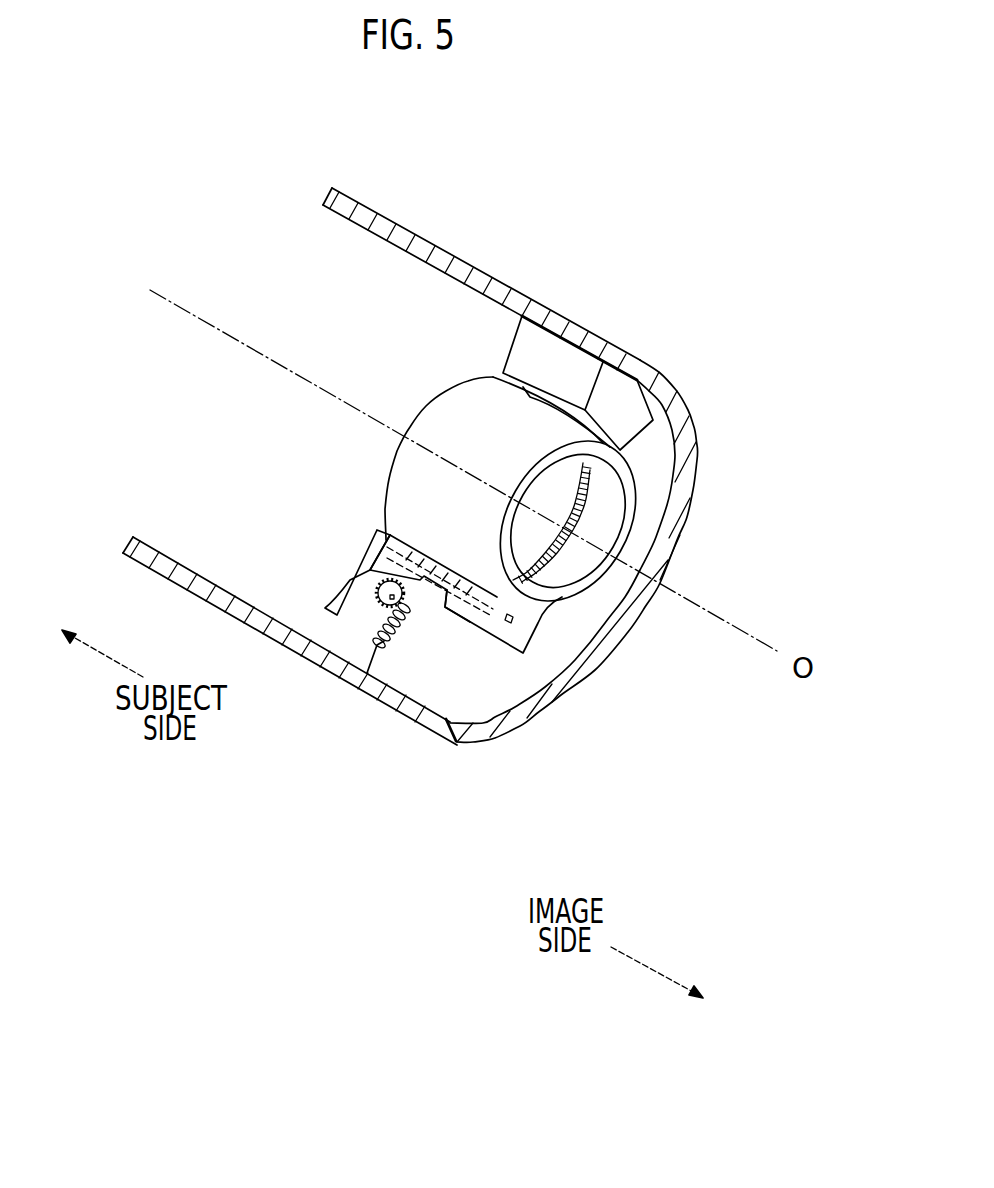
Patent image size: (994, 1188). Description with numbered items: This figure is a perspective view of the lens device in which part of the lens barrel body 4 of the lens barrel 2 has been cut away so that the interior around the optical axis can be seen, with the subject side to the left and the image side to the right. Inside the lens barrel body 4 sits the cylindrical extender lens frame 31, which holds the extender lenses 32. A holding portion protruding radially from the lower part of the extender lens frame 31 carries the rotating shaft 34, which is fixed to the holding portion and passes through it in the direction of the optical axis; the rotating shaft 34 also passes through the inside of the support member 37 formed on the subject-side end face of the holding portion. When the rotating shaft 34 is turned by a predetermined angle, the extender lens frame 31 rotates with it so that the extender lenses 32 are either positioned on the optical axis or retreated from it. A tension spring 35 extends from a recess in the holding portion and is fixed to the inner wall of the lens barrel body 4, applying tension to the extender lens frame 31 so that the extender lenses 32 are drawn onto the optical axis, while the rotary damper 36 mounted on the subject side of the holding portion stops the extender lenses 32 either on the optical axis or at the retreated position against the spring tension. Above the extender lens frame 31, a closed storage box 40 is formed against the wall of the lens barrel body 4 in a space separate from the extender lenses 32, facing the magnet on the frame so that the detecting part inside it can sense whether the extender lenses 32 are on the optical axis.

The lens barrel 2 is at (420, 233).
The lens barrel body 4 is at (550, 289).
The extender lens frame 31 is at (433, 413).
The extender lenses 32 is at (567, 513).
The rotating shaft 34 is at (458, 612).
The tension spring 35 is at (393, 652).
The rotary damper 36 is at (381, 610).
The support member 37 is at (357, 578).
The storage box 40 is at (527, 357).